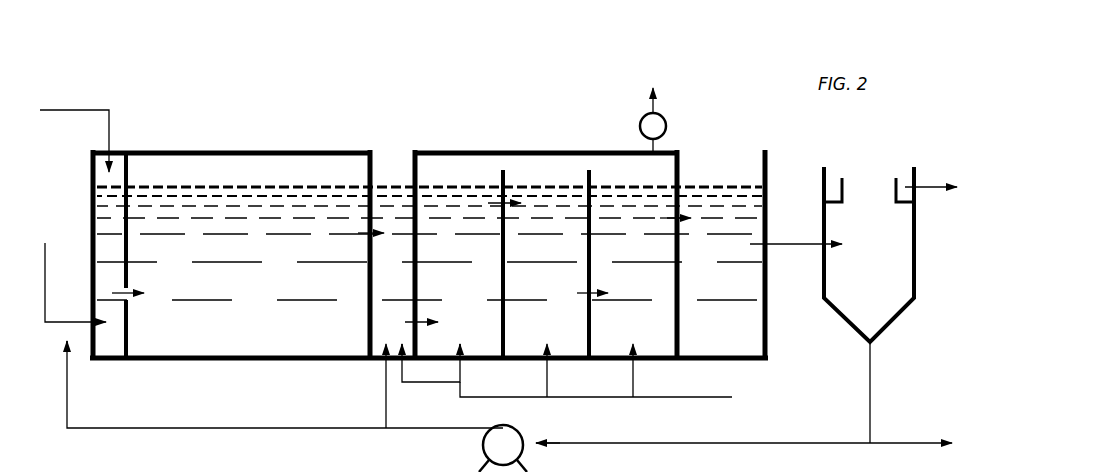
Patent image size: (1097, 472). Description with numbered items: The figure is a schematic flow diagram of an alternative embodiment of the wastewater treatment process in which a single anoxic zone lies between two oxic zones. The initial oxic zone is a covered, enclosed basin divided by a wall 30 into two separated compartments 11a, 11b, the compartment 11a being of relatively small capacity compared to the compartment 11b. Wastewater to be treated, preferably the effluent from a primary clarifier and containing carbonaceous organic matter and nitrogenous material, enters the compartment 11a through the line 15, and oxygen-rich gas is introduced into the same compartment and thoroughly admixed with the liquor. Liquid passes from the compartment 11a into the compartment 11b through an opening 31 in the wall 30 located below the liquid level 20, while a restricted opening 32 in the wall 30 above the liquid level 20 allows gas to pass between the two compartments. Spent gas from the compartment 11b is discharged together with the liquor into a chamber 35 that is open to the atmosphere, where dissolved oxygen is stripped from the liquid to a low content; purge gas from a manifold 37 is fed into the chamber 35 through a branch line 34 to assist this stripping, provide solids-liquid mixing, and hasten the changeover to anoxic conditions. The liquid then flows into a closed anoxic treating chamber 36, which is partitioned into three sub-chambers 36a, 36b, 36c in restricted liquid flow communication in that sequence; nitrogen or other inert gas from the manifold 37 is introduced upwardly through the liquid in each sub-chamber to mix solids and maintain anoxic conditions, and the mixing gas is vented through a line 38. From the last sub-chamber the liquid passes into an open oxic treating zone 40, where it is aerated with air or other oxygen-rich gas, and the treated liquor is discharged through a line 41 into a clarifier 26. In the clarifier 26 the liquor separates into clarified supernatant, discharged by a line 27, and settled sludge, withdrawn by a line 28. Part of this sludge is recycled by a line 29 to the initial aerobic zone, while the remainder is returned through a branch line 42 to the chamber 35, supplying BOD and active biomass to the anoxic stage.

The compartment 11a is at (122, 274).
The compartment 11b is at (262, 294).
The line 15 is at (45, 272).
The liquid level 20 is at (236, 187).
The clarifier 26 is at (886, 284).
The line 27 is at (934, 186).
The line 28 is at (872, 386).
The line 29 is at (762, 445).
The wall 30 is at (128, 277).
The opening 31 is at (135, 300).
The restricted opening 32 is at (128, 180).
The branch line 34 is at (415, 384).
The chamber 35 is at (402, 296).
The anoxic treating chamber 36 is at (687, 86).
The sub-chamber 36a is at (476, 296).
The sub-chamber 36b is at (563, 296).
The sub-chamber 36c is at (653, 296).
The manifold 37 is at (620, 398).
The line 38 is at (653, 100).
The oxic treating zone 40 is at (728, 296).
The line 41 is at (768, 244).
The branch line 42 is at (386, 398).